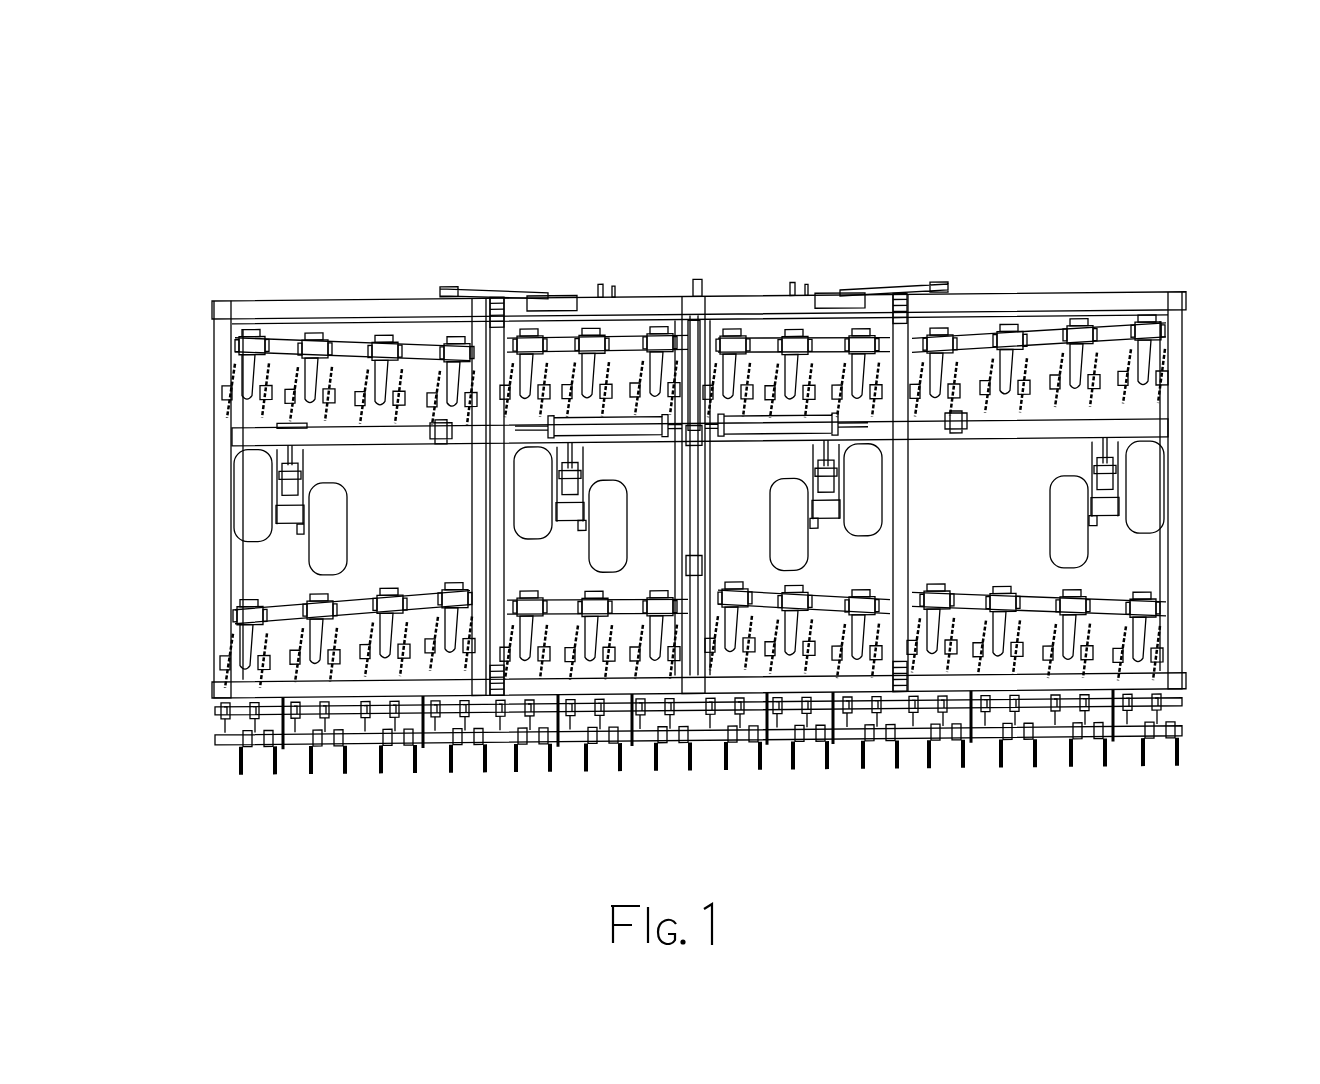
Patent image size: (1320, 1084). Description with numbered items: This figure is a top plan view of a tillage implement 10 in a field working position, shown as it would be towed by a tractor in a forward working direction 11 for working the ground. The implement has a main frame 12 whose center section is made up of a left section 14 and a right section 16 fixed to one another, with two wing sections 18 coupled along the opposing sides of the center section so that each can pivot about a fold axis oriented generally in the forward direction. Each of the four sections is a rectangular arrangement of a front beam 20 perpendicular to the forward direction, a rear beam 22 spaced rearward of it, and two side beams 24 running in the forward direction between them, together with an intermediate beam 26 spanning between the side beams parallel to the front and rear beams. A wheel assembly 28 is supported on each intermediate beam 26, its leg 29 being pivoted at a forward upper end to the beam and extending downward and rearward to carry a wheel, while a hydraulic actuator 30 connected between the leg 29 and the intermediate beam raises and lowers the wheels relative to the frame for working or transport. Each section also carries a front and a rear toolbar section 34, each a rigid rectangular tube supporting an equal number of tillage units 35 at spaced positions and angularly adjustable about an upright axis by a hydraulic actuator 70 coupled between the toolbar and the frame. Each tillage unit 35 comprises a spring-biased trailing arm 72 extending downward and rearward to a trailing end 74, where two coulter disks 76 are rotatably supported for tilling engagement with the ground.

The tillage implement 10 is at (1231, 120).
The forward working direction 11 is at (487, 143).
The main frame 12 is at (729, 205).
The left section 14 is at (604, 245).
The right section 16 is at (842, 243).
The wing section 18 is at (707, 428).
The front beam 20 is at (1075, 292).
The rear beam 22 is at (1165, 682).
The side beam 24 is at (1180, 527).
The intermediate beam 26 is at (1147, 431).
The wheel assembly 28 is at (296, 510).
The leg 29 is at (280, 505).
The hydraulic actuator 30 is at (290, 483).
The toolbar section 34 is at (1120, 335).
The tillage unit 35 is at (239, 463).
The hydraulic actuator 70 is at (1022, 390).
The trailing arm 72 is at (310, 392).
The trailing end 74 is at (321, 423).
The coulter disk 76 is at (236, 387).